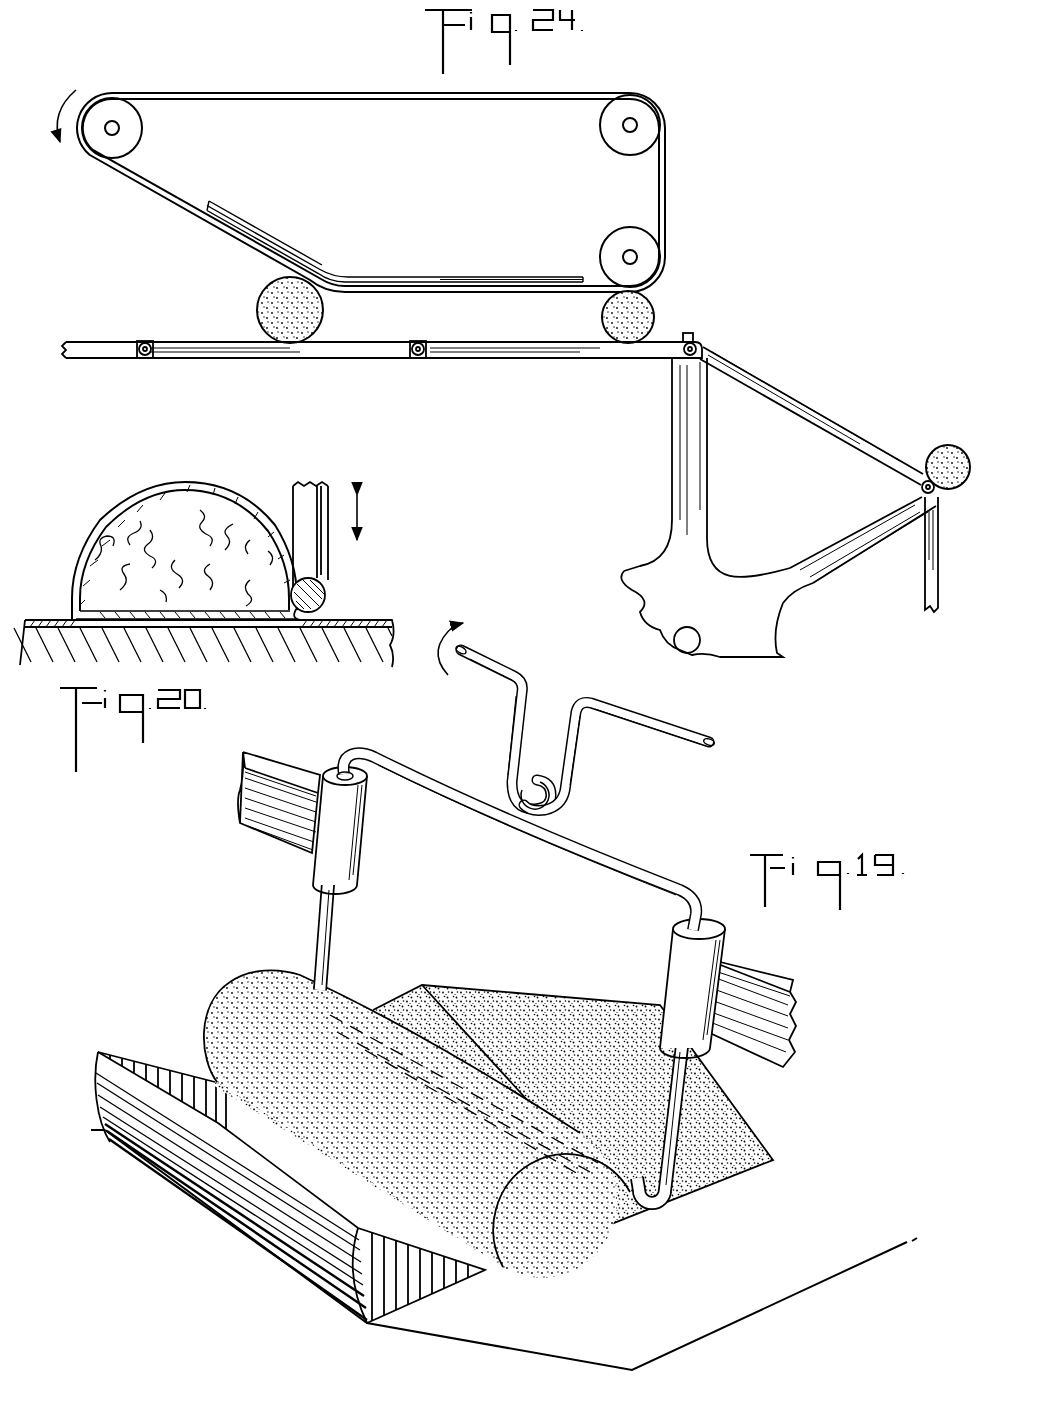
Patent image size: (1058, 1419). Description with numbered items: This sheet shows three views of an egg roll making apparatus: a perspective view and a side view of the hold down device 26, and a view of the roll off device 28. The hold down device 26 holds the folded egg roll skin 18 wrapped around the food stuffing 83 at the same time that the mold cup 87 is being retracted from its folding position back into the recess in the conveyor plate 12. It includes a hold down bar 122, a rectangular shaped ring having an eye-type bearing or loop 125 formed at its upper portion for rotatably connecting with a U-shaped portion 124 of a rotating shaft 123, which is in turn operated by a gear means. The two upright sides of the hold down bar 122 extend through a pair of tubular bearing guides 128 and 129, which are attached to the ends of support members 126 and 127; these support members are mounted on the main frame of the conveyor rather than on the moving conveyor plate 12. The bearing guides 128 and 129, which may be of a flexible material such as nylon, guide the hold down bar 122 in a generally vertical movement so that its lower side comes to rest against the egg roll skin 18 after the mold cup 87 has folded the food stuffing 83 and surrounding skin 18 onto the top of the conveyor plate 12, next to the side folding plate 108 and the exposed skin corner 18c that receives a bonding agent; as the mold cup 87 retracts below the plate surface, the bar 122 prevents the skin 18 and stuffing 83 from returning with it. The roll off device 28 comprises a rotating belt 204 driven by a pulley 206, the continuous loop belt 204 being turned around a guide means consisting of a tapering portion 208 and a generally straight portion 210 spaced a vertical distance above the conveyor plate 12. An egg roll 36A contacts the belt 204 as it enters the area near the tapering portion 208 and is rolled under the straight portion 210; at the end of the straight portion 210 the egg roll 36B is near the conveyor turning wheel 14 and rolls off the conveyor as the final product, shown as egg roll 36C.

In FIG. 24, the conveyor plate 12 is at (541, 358).
In FIG. 20, the conveyor plate 12 is at (47, 626).
In FIG. 24, the conveyor turning wheel 14 is at (675, 452).
In FIG. 20, the egg roll skin 18 is at (184, 520).
In FIG. 19, the egg roll skin 18 is at (246, 988).
In FIG. 19, the corner of egg roll skin 18c is at (726, 1114).
In FIG. 19, the hold down device 26 is at (262, 882).
In FIG. 24, the roll off device 28 is at (486, 185).
In FIG. 24, the egg roll 36A is at (262, 299).
In FIG. 24, the egg roll 36B is at (655, 314).
In FIG. 24, the egg roll 36C is at (943, 446).
In FIG. 20, the food stuffing 83 is at (207, 505).
In FIG. 19, the mold cup 87 is at (112, 1073).
In FIG. 19, the side folding plate 108 is at (760, 1292).
In FIG. 20, the hold down bar 122 is at (324, 595).
In FIG. 19, the hold down bar 122 is at (336, 937).
In FIG. 19, the rotating shaft 123 is at (676, 728).
In FIG. 19, the U-shaped portion 124 is at (506, 757).
In FIG. 19, the loop 125 is at (517, 803).
In FIG. 19, the support member 126 is at (237, 788).
In FIG. 19, the support member 127 is at (741, 980).
In FIG. 19, the tubular bearing guide 128 is at (338, 770).
In FIG. 19, the tubular bearing guide 129 is at (728, 918).
In FIG. 24, the rotating belt 204 is at (311, 99).
In FIG. 24, the pulley 206 is at (143, 128).
In FIG. 24, the tapering portion 208 is at (285, 253).
In FIG. 24, the straight portion 210 is at (484, 276).